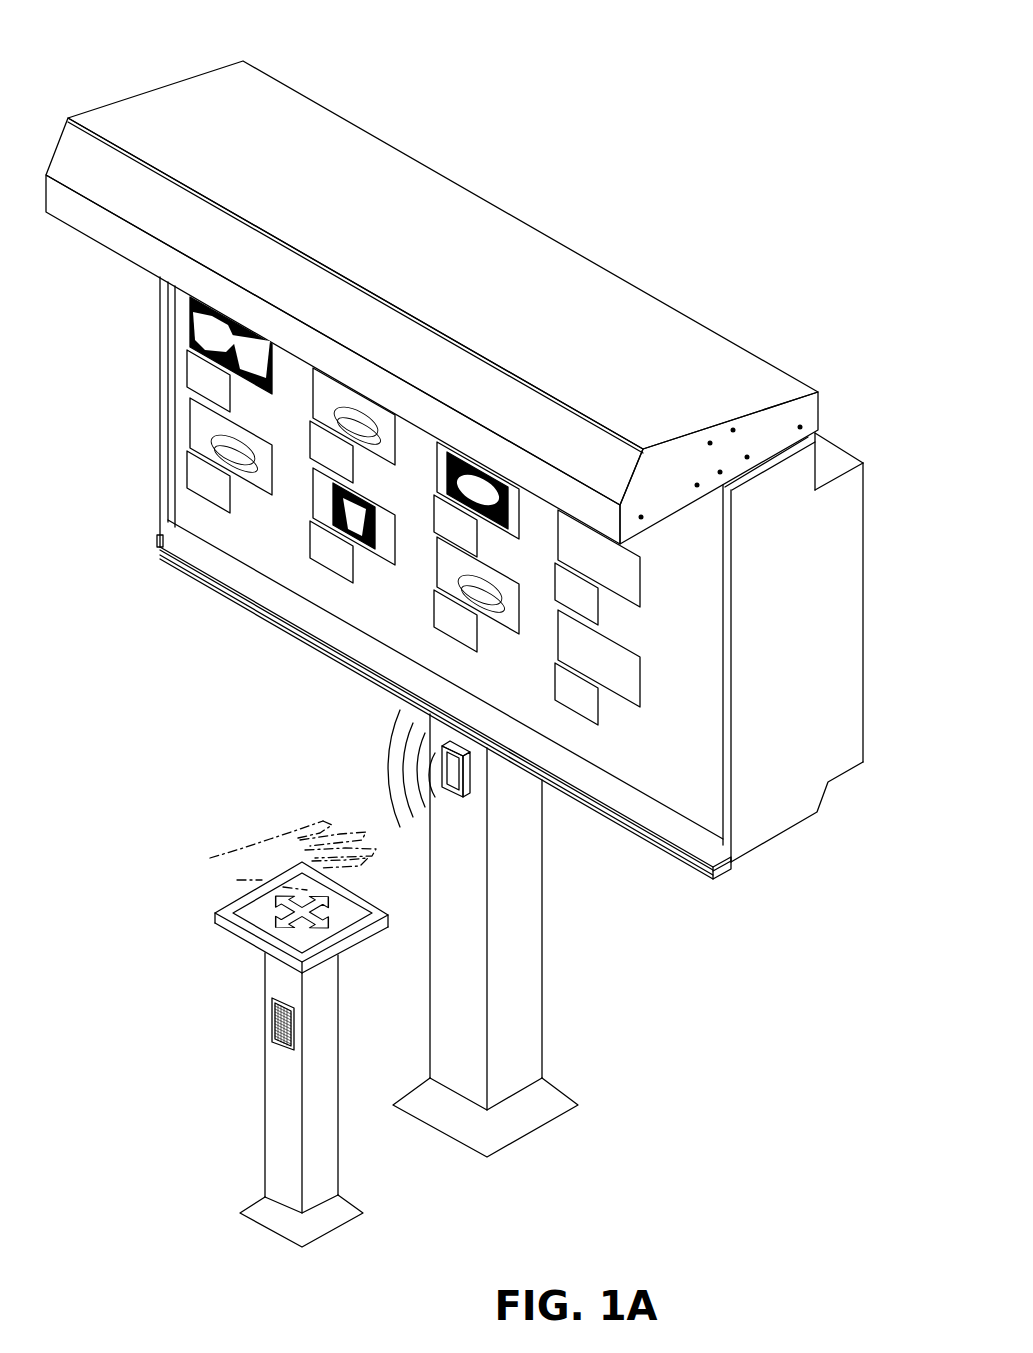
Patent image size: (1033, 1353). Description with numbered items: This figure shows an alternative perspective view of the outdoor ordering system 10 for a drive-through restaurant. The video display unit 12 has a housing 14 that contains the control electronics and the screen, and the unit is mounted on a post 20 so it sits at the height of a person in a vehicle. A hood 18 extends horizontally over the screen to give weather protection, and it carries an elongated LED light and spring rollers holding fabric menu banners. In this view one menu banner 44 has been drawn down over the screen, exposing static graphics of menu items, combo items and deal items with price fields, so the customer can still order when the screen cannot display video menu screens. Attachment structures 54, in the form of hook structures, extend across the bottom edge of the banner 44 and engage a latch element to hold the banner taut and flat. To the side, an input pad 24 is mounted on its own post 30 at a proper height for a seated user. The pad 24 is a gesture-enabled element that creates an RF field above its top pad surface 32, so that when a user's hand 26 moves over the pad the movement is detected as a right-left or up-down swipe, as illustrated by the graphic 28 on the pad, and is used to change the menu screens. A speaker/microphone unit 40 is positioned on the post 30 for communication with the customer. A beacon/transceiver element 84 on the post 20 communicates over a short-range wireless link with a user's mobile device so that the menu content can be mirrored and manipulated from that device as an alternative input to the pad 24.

The outdoor ordering system 10 is at (100, 56).
The video display unit 12 is at (862, 548).
The housing 14 is at (778, 817).
The hood 18 is at (741, 347).
The post 20 is at (520, 918).
The input pad 24 is at (376, 930).
The user's hand 26 is at (283, 830).
The graphic 28 is at (253, 938).
The post 30 is at (328, 1147).
The top pad surface 32 is at (347, 912).
The speaker/microphone unit 40 is at (270, 1025).
The menu banner 44 is at (656, 778).
The attachment structures 54 is at (703, 876).
The beacon/transceiver element 84 is at (452, 776).